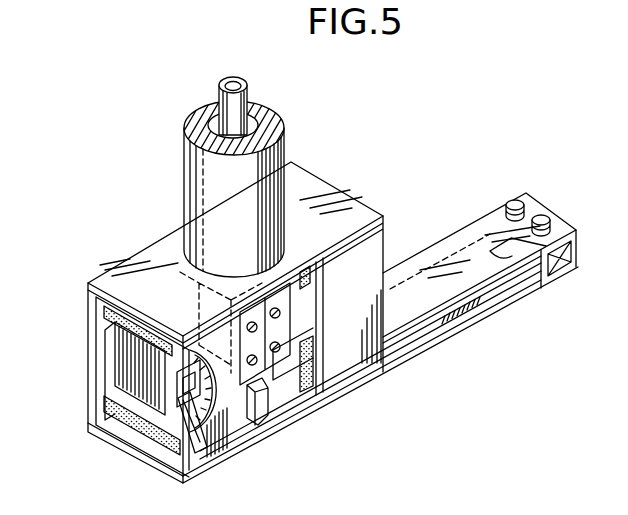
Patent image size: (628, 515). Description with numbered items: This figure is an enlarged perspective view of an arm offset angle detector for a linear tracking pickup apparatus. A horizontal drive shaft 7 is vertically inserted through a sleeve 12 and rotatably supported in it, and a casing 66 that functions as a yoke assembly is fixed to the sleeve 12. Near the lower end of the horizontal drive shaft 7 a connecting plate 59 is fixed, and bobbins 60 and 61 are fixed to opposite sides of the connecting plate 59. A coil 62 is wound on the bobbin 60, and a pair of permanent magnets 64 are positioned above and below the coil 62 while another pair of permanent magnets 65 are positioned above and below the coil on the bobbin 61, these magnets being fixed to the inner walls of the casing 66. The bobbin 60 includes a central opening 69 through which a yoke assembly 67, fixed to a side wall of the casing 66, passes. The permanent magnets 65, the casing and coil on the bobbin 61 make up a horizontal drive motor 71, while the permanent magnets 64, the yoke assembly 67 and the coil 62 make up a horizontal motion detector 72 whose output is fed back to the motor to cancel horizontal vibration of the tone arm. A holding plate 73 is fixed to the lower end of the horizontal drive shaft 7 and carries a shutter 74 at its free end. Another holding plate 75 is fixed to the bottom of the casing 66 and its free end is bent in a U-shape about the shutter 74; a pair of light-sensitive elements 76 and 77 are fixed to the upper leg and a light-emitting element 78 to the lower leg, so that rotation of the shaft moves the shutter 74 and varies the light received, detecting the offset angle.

The horizontal drive shaft 7 is at (234, 110).
The sleeve 12 is at (208, 197).
The connecting plate 59 is at (178, 258).
The bobbin 60 is at (133, 437).
The bobbin 61 is at (291, 312).
The coil 62 is at (132, 367).
The permanent magnets 64 is at (117, 317).
The permanent magnets 65 is at (303, 272).
The casing 66 is at (302, 178).
The yoke assembly 67 is at (218, 433).
The central opening 69 is at (185, 437).
The horizontal drive motor 71 is at (84, 436).
The horizontal motion detector 72 is at (166, 126).
The holding plate 73 is at (437, 317).
The shutter 74 is at (507, 240).
The holding plate 75 is at (447, 242).
The light-sensitive element 76 is at (517, 202).
The light-sensitive element 77 is at (545, 216).
The light-emitting element 78 is at (578, 263).